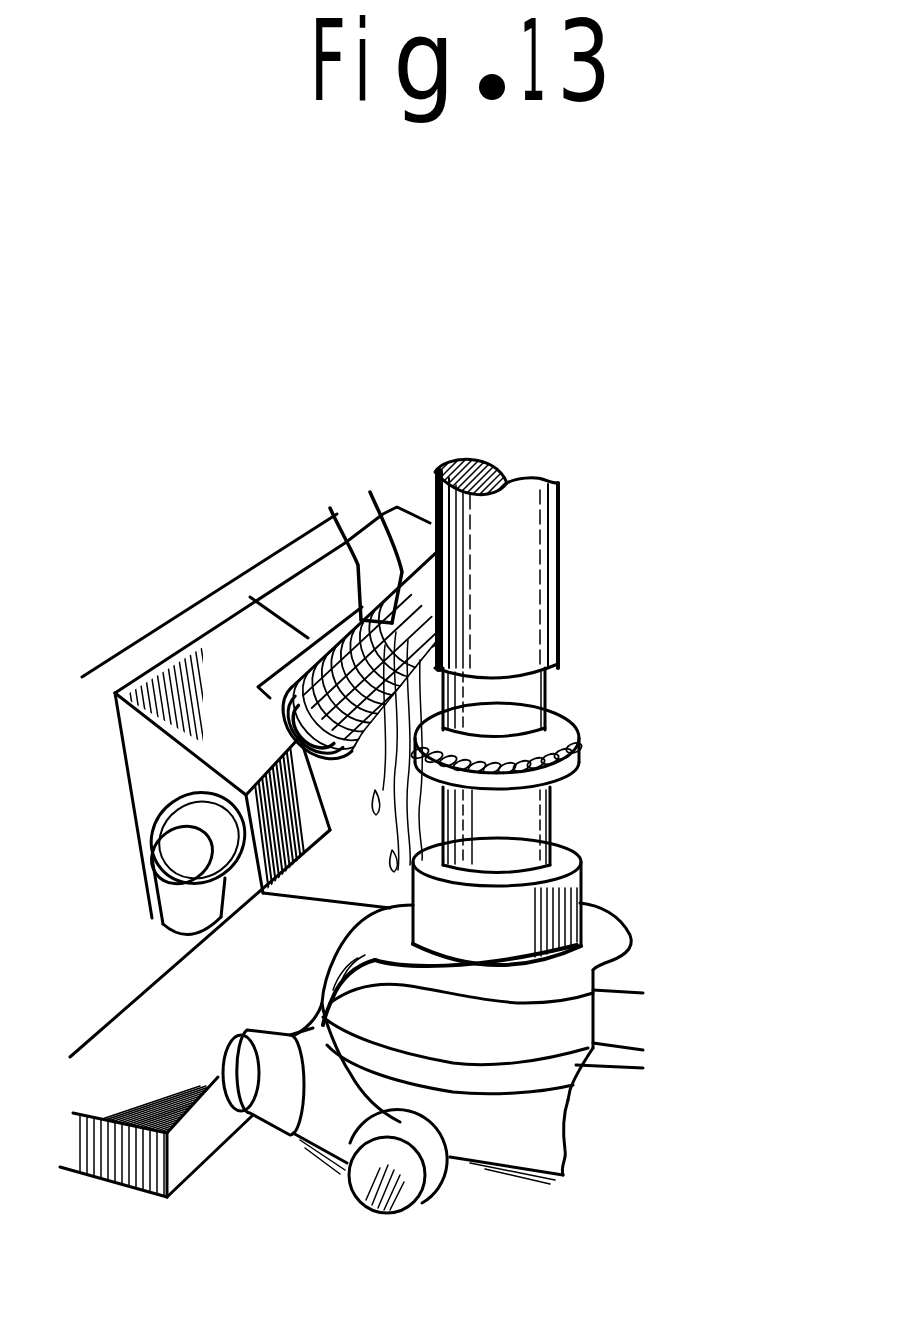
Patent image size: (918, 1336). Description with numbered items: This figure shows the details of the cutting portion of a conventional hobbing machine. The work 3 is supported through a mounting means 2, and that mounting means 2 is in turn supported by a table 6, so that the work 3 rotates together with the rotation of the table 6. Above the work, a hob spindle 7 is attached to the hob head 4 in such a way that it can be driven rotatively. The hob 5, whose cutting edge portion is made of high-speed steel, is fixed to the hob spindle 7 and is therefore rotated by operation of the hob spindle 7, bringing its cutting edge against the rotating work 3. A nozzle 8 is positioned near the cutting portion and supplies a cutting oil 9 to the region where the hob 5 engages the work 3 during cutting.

The mounting means 2 is at (513, 808).
The work 3 is at (580, 752).
The hob head 4 is at (332, 593).
The hob 5 is at (295, 633).
The table 6 is at (520, 1037).
The hob spindle 7 is at (307, 745).
The nozzle 8 is at (390, 600).
The cutting oil 9 is at (503, 843).